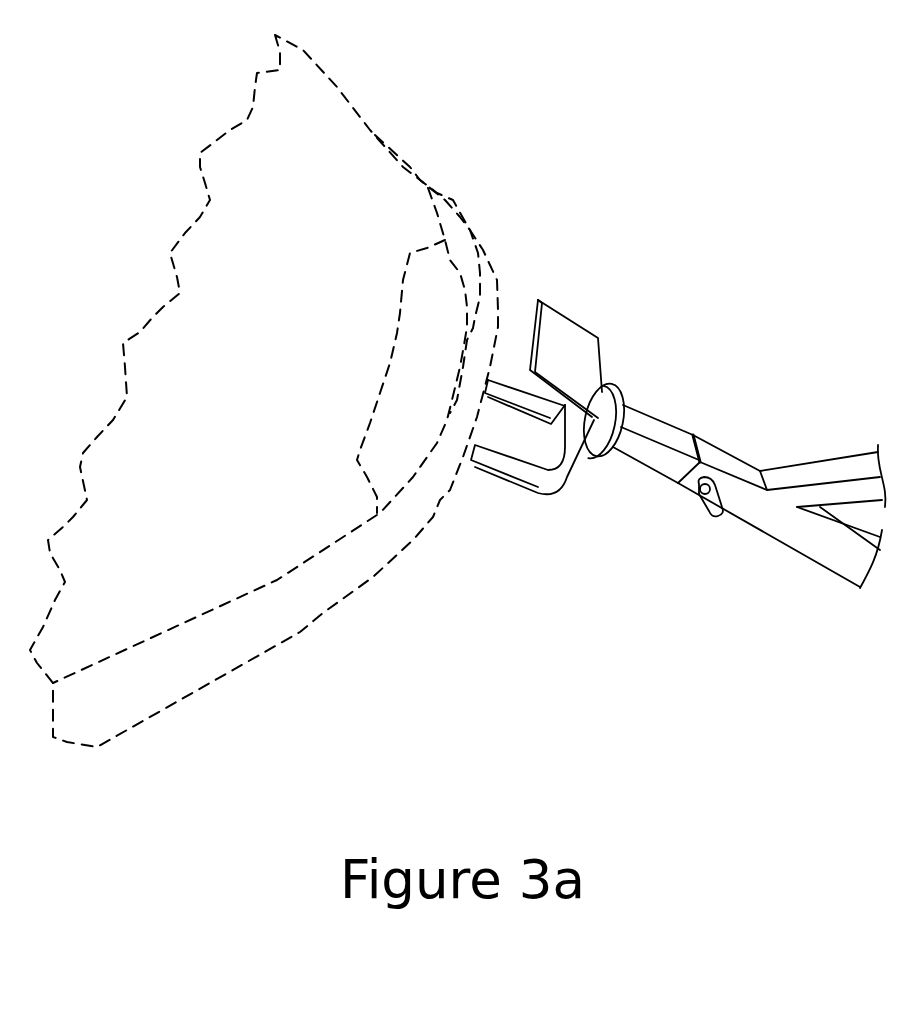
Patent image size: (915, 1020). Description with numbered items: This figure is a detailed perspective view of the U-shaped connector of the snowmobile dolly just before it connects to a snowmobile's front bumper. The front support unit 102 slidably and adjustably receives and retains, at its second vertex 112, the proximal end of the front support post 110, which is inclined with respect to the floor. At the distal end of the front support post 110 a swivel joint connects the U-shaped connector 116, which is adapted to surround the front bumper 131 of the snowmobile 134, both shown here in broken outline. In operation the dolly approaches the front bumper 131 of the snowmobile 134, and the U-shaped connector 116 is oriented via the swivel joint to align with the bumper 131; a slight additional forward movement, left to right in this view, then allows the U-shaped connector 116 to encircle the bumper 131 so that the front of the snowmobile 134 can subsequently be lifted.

The front support unit 102 is at (797, 433).
The front support post 110 is at (660, 430).
The second vertex 112 is at (713, 517).
The U-shaped connector 116 is at (542, 485).
The front bumper 131 is at (440, 500).
The snowmobile 134 is at (230, 590).